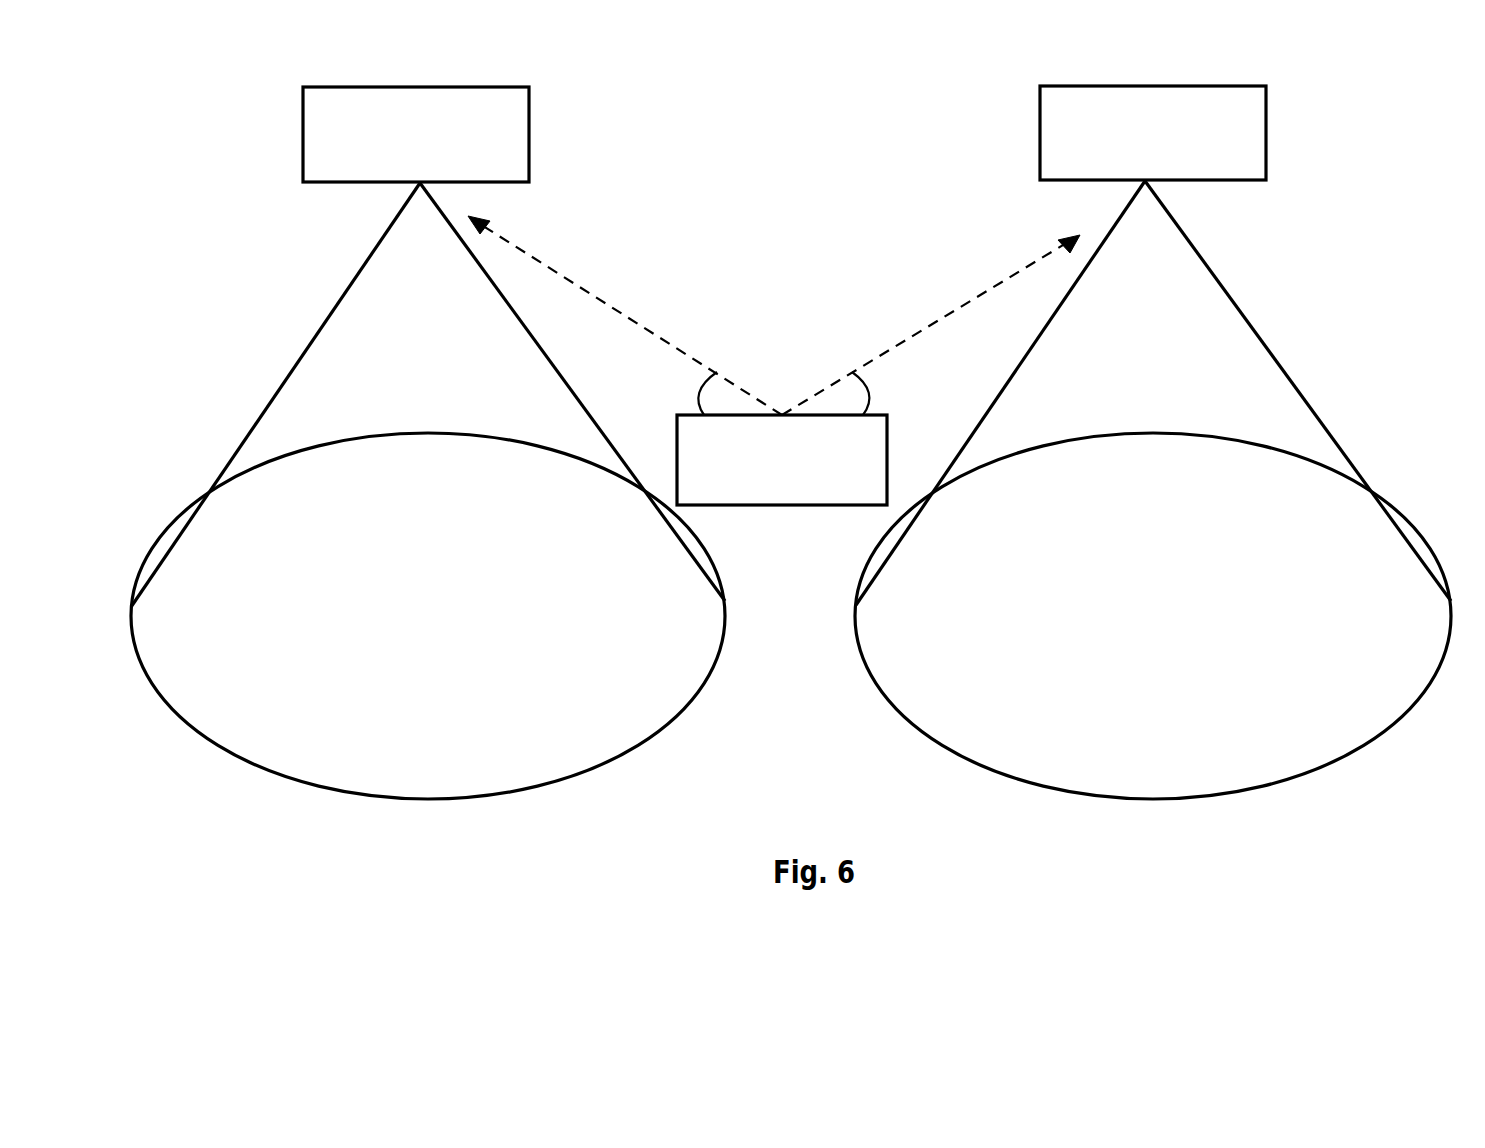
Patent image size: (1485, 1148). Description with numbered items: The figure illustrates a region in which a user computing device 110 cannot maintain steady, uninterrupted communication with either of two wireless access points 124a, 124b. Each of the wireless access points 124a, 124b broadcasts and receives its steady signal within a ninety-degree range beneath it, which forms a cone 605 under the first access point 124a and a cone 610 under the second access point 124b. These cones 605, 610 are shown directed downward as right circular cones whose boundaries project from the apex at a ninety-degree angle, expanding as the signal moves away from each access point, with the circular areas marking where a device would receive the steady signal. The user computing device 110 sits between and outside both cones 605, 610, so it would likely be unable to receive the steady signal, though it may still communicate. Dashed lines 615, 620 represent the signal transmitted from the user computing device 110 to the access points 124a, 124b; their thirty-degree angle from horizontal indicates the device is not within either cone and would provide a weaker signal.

The wireless access point 124a is at (416, 134).
The wireless access point 124b is at (1153, 133).
The user computing device 110 is at (782, 460).
The cone 605 is at (428, 491).
The cone 610 is at (1153, 490).
The dashed line 615 is at (625, 315).
The dashed line 620 is at (931, 325).